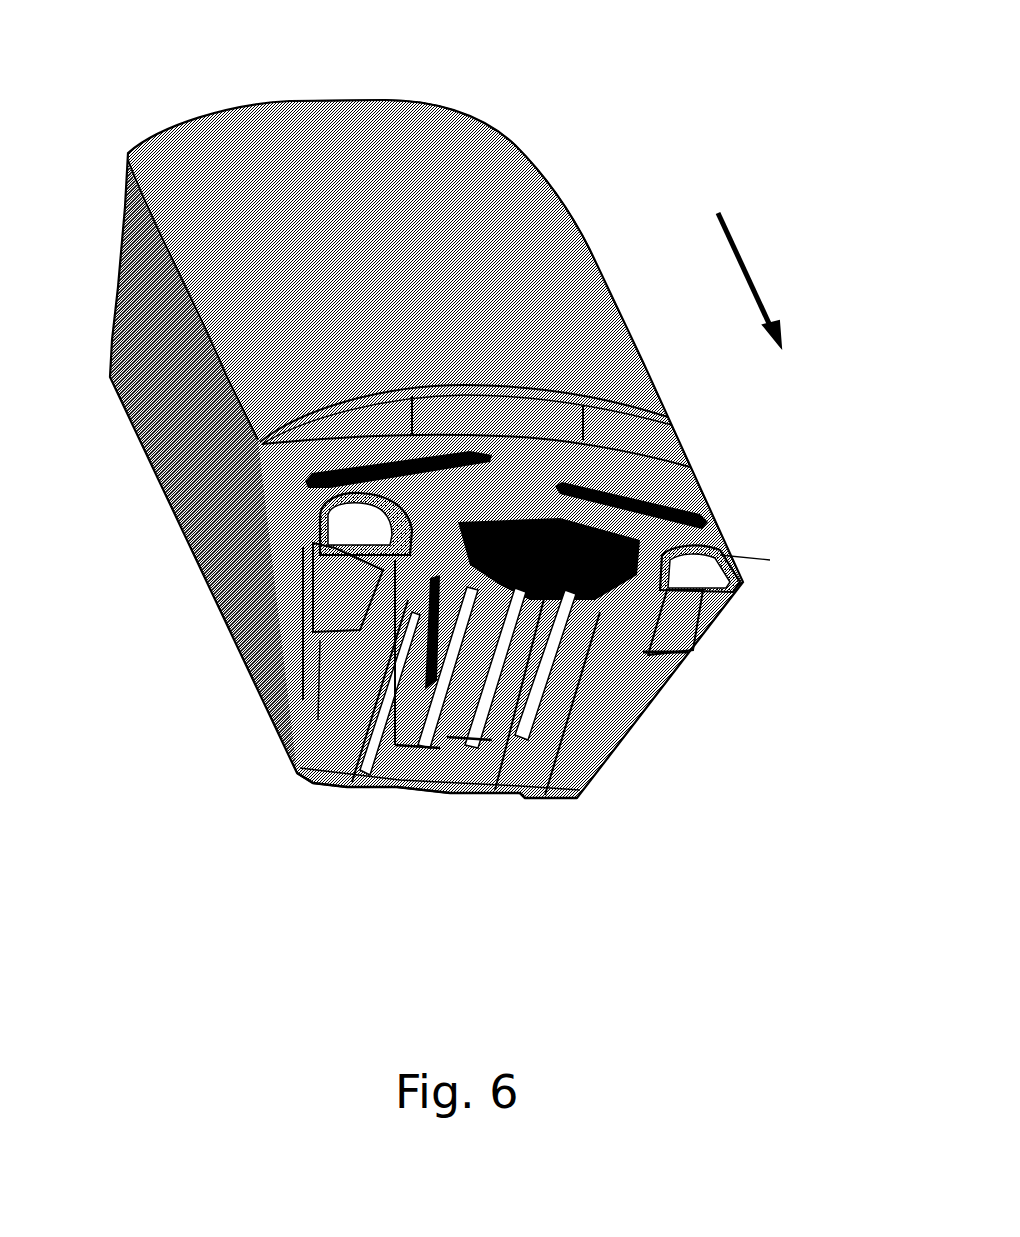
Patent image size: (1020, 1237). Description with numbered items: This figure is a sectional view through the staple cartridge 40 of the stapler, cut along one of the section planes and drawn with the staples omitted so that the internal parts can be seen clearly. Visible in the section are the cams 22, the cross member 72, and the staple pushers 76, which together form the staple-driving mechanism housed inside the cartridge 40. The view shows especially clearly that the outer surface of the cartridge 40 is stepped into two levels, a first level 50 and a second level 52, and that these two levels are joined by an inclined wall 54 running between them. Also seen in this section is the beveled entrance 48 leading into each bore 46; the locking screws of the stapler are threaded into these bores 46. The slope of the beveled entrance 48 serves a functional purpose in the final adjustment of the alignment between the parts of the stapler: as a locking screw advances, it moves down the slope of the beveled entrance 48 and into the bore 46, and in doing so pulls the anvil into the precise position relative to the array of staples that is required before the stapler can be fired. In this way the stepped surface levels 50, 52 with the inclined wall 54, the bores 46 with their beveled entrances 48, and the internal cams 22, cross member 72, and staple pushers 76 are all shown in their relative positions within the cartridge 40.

The cartridge 40 is at (552, 120).
The first level of the cartridge surface 50 is at (560, 300).
The inclined wall 54 is at (615, 438).
The second level of the cartridge surface 52 is at (700, 488).
The beveled entrance 48 is at (347, 525).
The bore 46 is at (347, 610).
The staple pusher 76 is at (578, 588).
The cam 22 is at (520, 735).
The cross member 72 is at (468, 790).